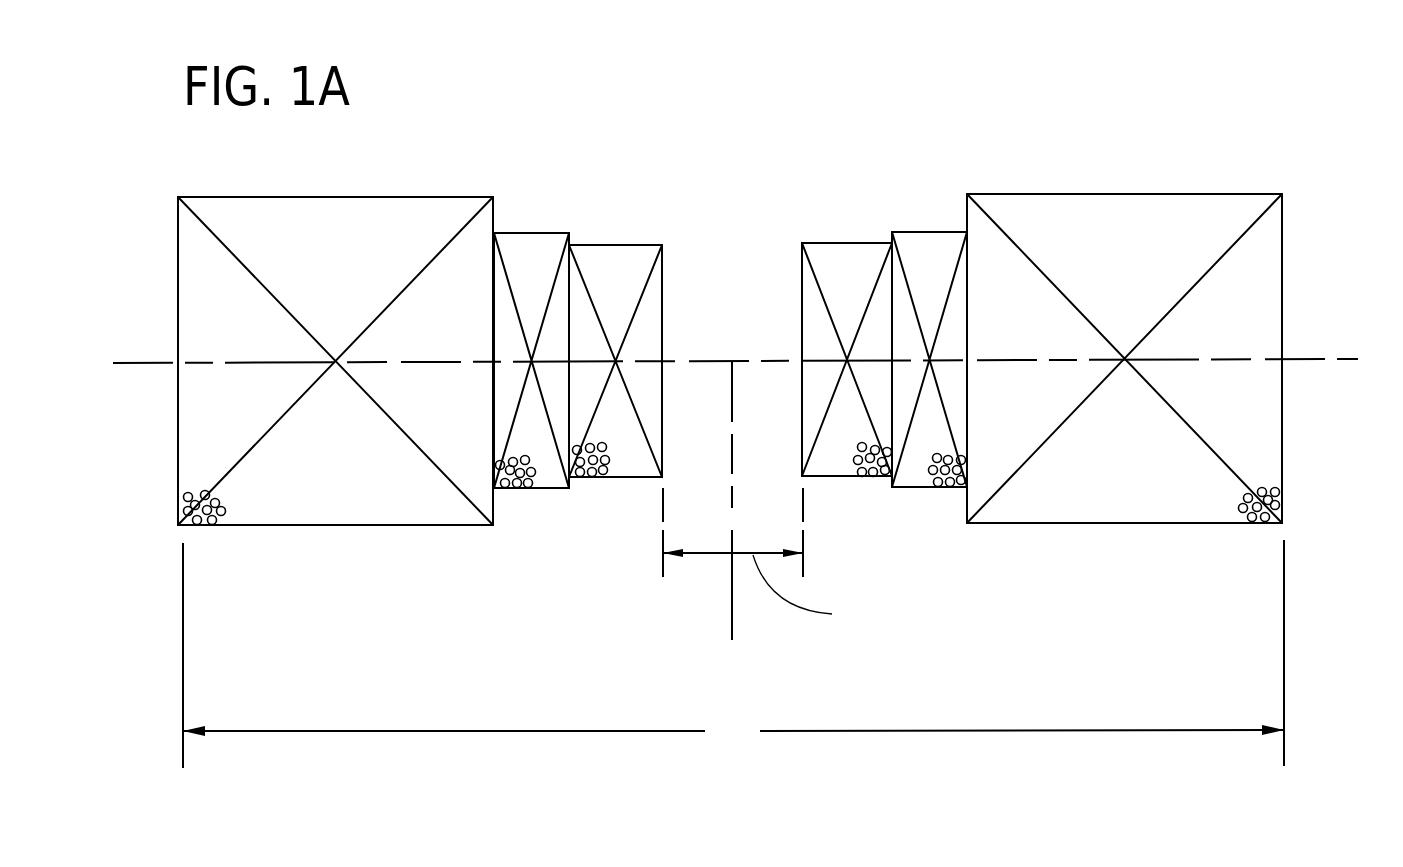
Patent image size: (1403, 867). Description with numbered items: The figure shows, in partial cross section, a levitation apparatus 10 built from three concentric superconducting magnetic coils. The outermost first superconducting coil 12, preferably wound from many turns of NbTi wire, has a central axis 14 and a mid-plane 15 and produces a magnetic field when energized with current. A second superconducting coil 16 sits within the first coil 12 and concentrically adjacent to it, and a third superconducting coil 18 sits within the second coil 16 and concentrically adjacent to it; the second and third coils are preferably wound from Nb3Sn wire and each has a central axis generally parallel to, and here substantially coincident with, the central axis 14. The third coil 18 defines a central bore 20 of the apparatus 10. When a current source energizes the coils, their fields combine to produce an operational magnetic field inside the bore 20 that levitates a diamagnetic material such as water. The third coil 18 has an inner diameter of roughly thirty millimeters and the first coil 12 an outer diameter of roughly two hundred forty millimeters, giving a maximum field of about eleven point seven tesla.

The apparatus 10 is at (1043, 98).
The first superconducting coil 12 is at (332, 197).
The central axis 14 is at (735, 630).
The mid-plane 15 is at (1320, 358).
The second superconducting coil 16 is at (524, 242).
The third superconducting coil 18 is at (610, 252).
The central bore 20 is at (727, 290).